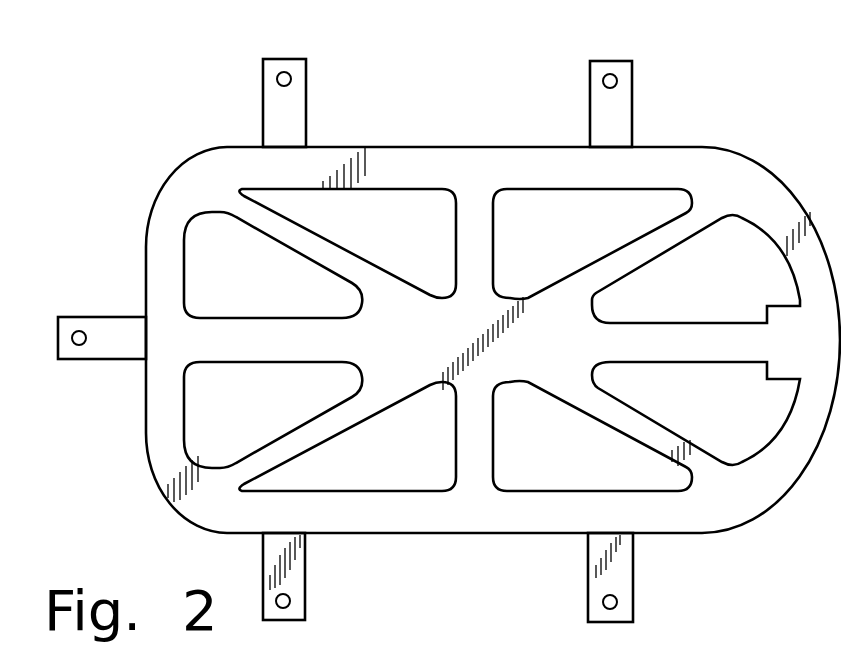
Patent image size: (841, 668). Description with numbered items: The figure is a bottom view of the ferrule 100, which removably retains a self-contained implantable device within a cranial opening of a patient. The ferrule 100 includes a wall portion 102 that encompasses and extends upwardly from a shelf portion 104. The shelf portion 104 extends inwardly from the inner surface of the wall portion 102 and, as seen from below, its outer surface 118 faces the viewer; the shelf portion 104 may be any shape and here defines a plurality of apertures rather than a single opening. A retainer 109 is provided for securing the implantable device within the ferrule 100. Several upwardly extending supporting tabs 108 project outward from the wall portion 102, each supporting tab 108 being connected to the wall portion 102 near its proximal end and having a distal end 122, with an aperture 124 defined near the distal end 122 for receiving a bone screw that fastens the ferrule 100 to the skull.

The ferrule 100 is at (150, 109).
The wall portion 102 is at (655, 533).
The shelf portion 104 is at (477, 503).
The supporting tab 108 is at (307, 103).
The retainer 109 is at (780, 305).
The outer surface 118 is at (395, 526).
The distal end 122 is at (588, 60).
The aperture 124 is at (617, 81).